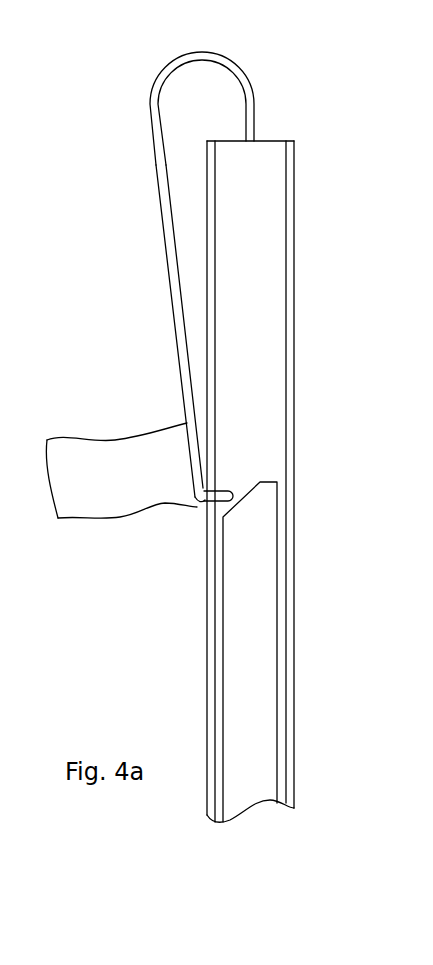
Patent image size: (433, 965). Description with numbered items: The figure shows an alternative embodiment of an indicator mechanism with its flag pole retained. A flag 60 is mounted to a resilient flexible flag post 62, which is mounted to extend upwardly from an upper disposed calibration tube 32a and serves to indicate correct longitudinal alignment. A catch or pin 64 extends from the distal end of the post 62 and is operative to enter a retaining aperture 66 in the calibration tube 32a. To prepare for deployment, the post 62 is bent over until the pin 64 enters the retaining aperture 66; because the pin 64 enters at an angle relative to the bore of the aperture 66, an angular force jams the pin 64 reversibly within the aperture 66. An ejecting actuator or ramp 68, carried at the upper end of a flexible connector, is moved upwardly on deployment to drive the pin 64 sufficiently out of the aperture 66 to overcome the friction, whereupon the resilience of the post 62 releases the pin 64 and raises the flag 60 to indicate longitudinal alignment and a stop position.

The calibration tube 32a is at (295, 302).
The flag 60 is at (72, 436).
The resilient flexible flag post 62 is at (250, 72).
The catch or pin 64 is at (229, 490).
The retaining aperture 66 is at (210, 515).
The ejecting actuator or ramp 68 is at (244, 511).